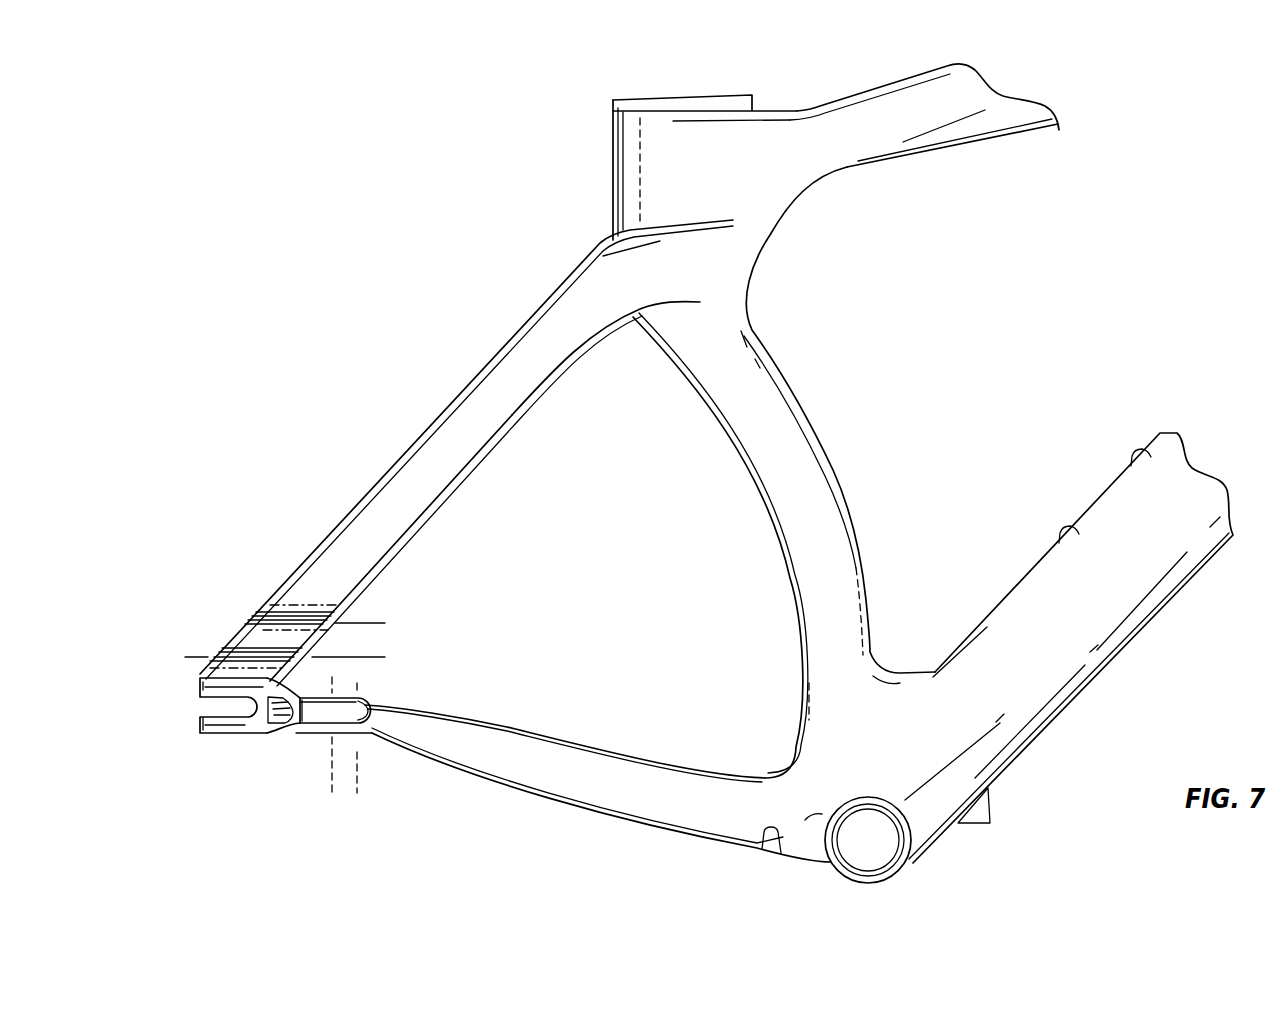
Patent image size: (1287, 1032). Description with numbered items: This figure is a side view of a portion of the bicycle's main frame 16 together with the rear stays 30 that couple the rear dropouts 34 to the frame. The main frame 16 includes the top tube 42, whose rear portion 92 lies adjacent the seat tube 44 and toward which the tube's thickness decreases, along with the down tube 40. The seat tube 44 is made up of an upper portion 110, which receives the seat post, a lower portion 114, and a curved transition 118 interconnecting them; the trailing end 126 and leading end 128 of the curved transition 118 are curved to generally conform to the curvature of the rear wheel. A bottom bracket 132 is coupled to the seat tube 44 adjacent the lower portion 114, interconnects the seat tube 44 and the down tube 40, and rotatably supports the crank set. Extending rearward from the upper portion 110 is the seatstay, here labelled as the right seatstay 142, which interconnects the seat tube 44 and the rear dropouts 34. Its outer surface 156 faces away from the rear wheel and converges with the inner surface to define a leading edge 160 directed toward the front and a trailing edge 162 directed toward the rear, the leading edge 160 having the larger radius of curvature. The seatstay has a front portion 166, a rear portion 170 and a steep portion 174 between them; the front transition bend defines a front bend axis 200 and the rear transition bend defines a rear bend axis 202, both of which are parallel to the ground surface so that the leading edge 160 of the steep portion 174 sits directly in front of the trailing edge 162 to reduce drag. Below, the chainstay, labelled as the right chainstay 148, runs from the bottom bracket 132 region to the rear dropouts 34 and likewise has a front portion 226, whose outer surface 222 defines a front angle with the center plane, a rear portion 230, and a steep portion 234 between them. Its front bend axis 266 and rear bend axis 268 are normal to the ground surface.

The rear stays 30 is at (418, 292).
The upper portion 110 is at (610, 177).
The rear portion 92 is at (789, 108).
The main frame 16 is at (883, 85).
The top tube 42 is at (855, 155).
The leading end 128 is at (824, 441).
The seat tube 44 is at (766, 523).
The trailing end 126 is at (735, 455).
The curved transition 118 is at (791, 609).
The lower portion 114 is at (843, 693).
The trailing edge 162 is at (520, 325).
The right seatstay 142 is at (423, 455).
The steep portion 174 is at (294, 633).
The leading edge 160 is at (514, 417).
The front portion 166 is at (567, 333).
The outer surface 156 is at (413, 503).
The rear portion 170 is at (221, 671).
The front bend axis 200 is at (357, 616).
The rear bend axis 202 is at (360, 657).
The rear dropouts 34 is at (215, 734).
The rear portion 230 is at (307, 730).
The steep portion 234 is at (368, 703).
The rear bend axis 268 is at (330, 768).
The front bend axis 266 is at (353, 770).
The outer surface 222 is at (430, 747).
The right chainstay 148 is at (508, 773).
The front portion 226 is at (588, 798).
The bottom bracket 132 is at (923, 807).
The down tube 40 is at (1140, 610).